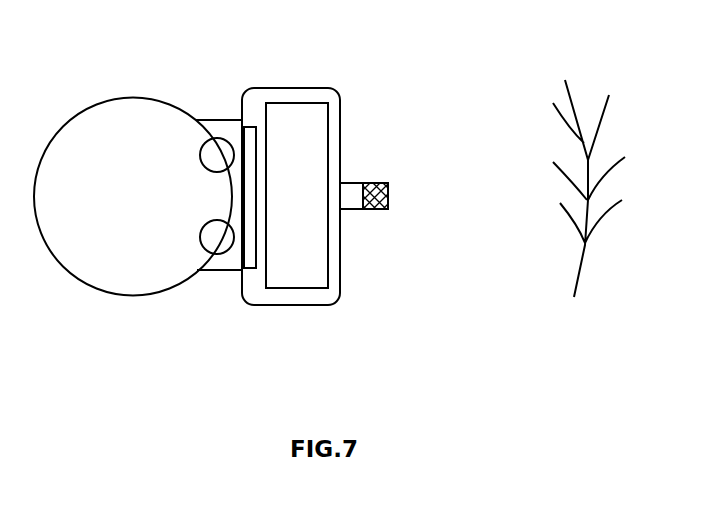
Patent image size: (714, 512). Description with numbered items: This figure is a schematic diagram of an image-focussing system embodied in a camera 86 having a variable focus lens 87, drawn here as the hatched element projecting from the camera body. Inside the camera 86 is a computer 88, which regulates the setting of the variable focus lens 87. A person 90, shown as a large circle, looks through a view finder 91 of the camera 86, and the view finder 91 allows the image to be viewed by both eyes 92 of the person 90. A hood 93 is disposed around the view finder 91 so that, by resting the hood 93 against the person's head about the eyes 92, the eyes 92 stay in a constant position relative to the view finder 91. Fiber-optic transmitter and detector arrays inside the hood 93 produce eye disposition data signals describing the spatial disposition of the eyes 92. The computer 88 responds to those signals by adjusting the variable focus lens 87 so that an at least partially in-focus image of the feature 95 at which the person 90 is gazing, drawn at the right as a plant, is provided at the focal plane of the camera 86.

The camera 86 is at (322, 86).
The variable focus lens 87 is at (368, 183).
The computer 88 is at (318, 288).
The person 90 is at (90, 107).
The view finder 91 is at (250, 127).
The eyes 92 is at (200, 155).
The hood 93 is at (222, 120).
The feature 95 is at (574, 290).